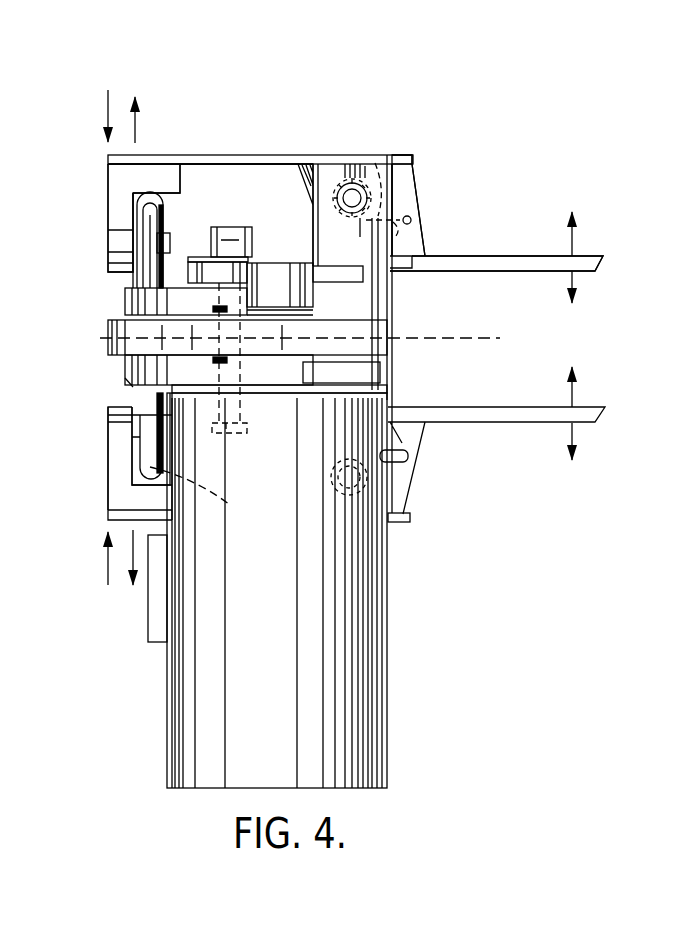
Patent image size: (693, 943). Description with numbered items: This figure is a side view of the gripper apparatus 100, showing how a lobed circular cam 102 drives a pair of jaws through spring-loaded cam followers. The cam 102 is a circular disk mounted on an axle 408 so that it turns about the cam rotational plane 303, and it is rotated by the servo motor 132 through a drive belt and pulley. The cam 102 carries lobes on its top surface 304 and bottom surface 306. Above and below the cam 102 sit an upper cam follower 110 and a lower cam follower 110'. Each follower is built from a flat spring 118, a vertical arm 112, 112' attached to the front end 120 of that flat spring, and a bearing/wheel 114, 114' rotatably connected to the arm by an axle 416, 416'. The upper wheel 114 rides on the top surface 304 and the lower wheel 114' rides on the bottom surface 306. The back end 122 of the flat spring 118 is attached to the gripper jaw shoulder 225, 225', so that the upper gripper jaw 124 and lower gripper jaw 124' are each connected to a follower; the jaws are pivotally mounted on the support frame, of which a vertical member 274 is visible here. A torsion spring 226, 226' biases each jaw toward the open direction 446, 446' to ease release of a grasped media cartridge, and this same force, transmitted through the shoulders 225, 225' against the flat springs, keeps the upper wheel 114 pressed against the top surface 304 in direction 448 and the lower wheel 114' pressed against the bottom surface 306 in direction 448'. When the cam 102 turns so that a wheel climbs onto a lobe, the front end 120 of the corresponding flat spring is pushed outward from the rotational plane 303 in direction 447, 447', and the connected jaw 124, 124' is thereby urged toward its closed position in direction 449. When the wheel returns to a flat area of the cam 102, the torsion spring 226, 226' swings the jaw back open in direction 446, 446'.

The gripper apparatus 100 is at (252, 104).
The lobed circular cam 102 is at (104, 333).
The cam follower 110 is at (157, 218).
The cam follower 110' is at (88, 456).
The vertical arm 112 is at (67, 218).
The vertical arm 112' is at (92, 458).
The cam follower bearing/wheel 114 is at (193, 226).
The cam follower bearing/wheel 114' is at (215, 480).
The flat spring 118 is at (268, 156).
The front end 120 is at (103, 155).
The back end 122 is at (398, 148).
The gripper jaw 124 is at (496, 232).
The gripper jaw 124' is at (496, 448).
The servo motor 132 is at (363, 658).
The gripper jaw shoulder 225 is at (451, 209).
The gripper jaw shoulder 225' is at (467, 462).
The torsion spring 226 is at (366, 152).
The torsion spring 226' is at (418, 517).
The vertical member 274 is at (405, 303).
The cam rotational plane 303 is at (460, 340).
The top surface 304 is at (128, 290).
The bottom surface 306 is at (135, 388).
The axle 408 is at (230, 438).
The axle 416 is at (228, 307).
The axle 416' is at (221, 496).
The open direction 446 is at (624, 220).
The open direction 446' is at (628, 443).
The outward displacement direction 447 is at (177, 111).
The outward displacement direction 447' is at (82, 580).
The bias direction 448 is at (67, 110).
The bias direction 448' is at (63, 558).
The closed direction 449 is at (578, 279).